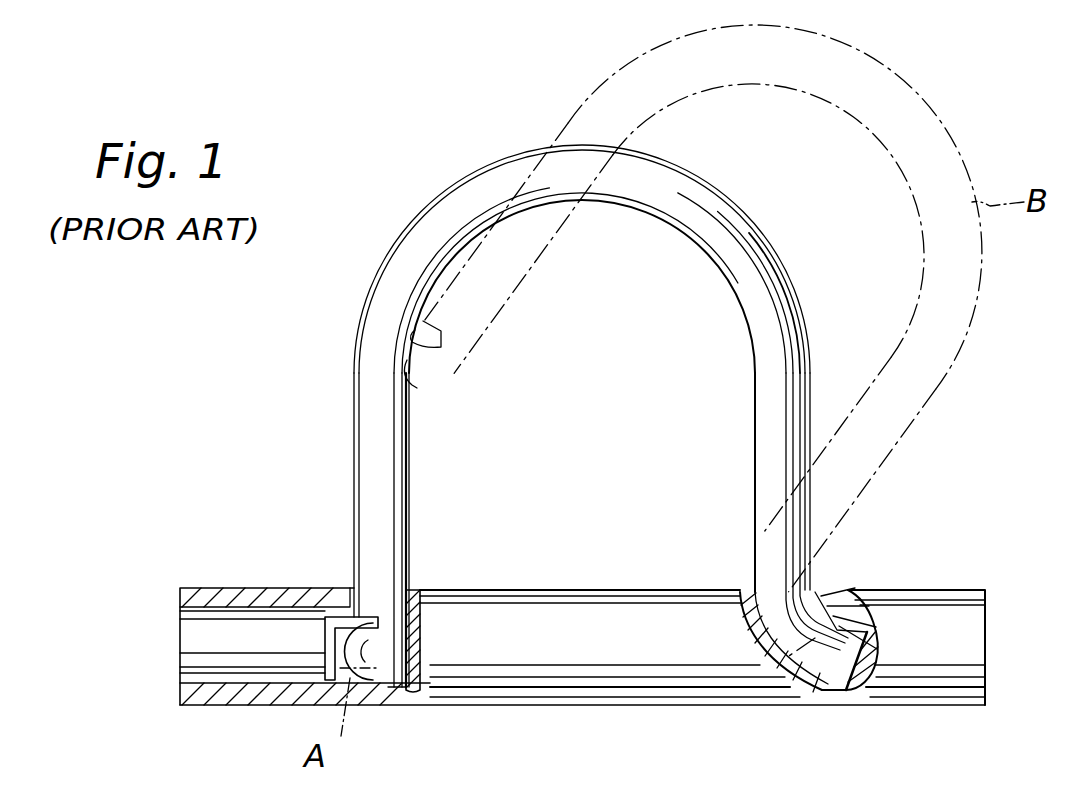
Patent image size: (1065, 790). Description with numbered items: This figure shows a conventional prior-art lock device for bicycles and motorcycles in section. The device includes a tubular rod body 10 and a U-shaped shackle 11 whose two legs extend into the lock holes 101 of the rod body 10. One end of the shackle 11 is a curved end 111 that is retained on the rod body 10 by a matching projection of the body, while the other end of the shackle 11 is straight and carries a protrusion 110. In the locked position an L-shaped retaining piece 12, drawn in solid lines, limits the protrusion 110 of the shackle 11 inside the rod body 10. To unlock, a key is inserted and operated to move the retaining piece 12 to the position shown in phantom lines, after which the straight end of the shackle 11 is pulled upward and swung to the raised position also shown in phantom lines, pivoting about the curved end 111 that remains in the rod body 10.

The tubular rod body 10 is at (958, 603).
The shackle 11 is at (483, 188).
The L-shaped retaining piece 12 is at (355, 645).
The lock holes 101 is at (407, 588).
The protrusion 110 is at (311, 633).
The curved end 111 is at (830, 670).